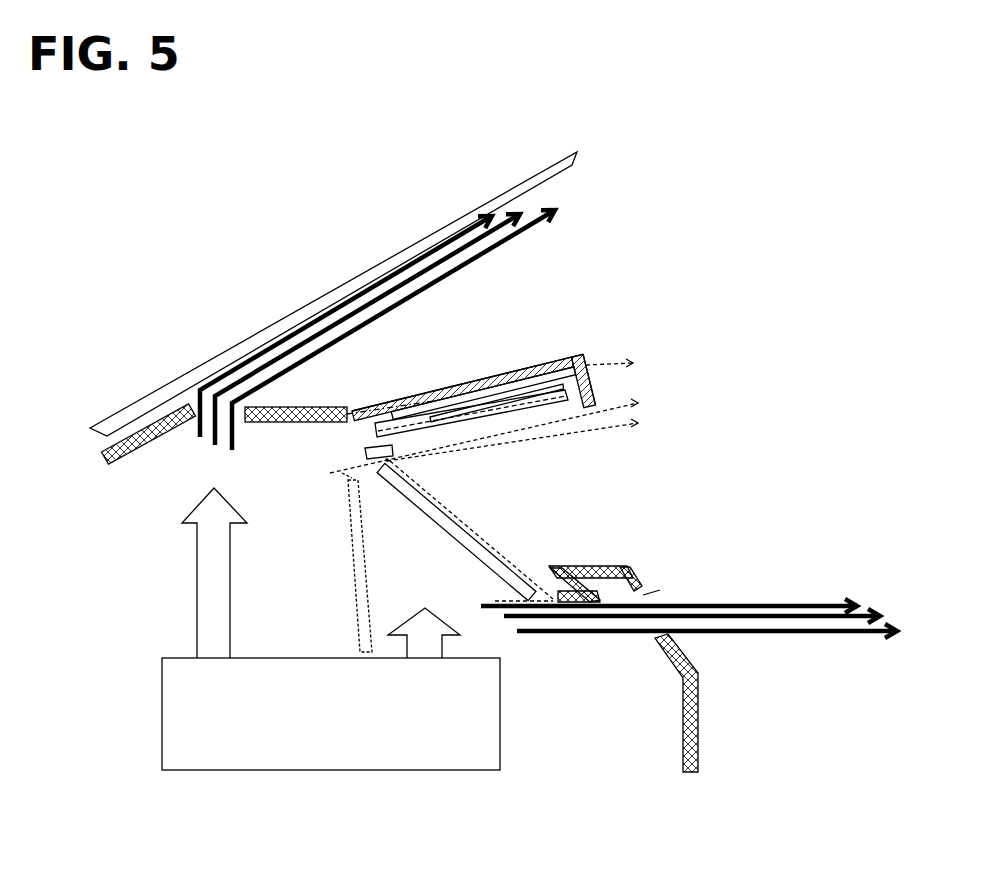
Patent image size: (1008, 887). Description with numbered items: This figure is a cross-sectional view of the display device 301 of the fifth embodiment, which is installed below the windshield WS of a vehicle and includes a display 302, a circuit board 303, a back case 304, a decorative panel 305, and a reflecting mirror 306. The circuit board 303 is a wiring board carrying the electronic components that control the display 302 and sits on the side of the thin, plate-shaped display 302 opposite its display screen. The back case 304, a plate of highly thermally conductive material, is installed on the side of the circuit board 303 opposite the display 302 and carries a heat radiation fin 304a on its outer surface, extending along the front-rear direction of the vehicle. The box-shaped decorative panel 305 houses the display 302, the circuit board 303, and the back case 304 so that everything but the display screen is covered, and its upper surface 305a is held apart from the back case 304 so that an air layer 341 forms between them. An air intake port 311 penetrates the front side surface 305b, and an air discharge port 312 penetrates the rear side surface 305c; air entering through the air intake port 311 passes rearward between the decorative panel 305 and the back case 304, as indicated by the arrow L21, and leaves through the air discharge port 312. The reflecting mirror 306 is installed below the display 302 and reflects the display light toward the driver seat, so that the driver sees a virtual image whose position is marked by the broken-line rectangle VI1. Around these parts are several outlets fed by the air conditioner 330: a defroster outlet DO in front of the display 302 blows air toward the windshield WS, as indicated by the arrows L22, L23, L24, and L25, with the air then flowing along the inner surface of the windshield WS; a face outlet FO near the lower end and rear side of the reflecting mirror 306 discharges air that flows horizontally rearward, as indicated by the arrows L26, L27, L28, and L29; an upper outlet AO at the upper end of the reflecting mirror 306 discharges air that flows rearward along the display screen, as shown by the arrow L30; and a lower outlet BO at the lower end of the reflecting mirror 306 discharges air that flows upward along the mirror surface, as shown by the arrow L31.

The display device 301 is at (525, 354).
The display 302 is at (528, 418).
The circuit board 303 is at (505, 417).
The back case 304 is at (437, 387).
The heat radiation fin 304a is at (390, 405).
The decorative panel 305 is at (577, 355).
The upper surface 305a is at (550, 357).
The front side surface 305b is at (340, 423).
The rear side surface 305c is at (592, 397).
The reflecting mirror 306 is at (455, 537).
The air intake port 311 is at (342, 467).
The air discharge port 312 is at (585, 363).
The air conditioner 330 is at (500, 688).
The air layer 341 is at (463, 383).
The arrow L21 is at (362, 402).
The arrow L22 is at (197, 590).
The arrow L23 is at (422, 257).
The arrow L24 is at (472, 232).
The arrow L25 is at (517, 203).
The arrow L26 is at (408, 622).
The arrow L27 is at (784, 602).
The arrow L28 is at (830, 612).
The arrow L29 is at (865, 627).
The arrow L30 is at (342, 473).
The arrow L31 is at (497, 542).
The windshield WS is at (287, 312).
The defroster outlet DO is at (190, 400).
The virtual image VI1 is at (348, 547).
The upper outlet AO is at (387, 460).
The lower outlet BO is at (540, 577).
The face outlet FO is at (643, 595).